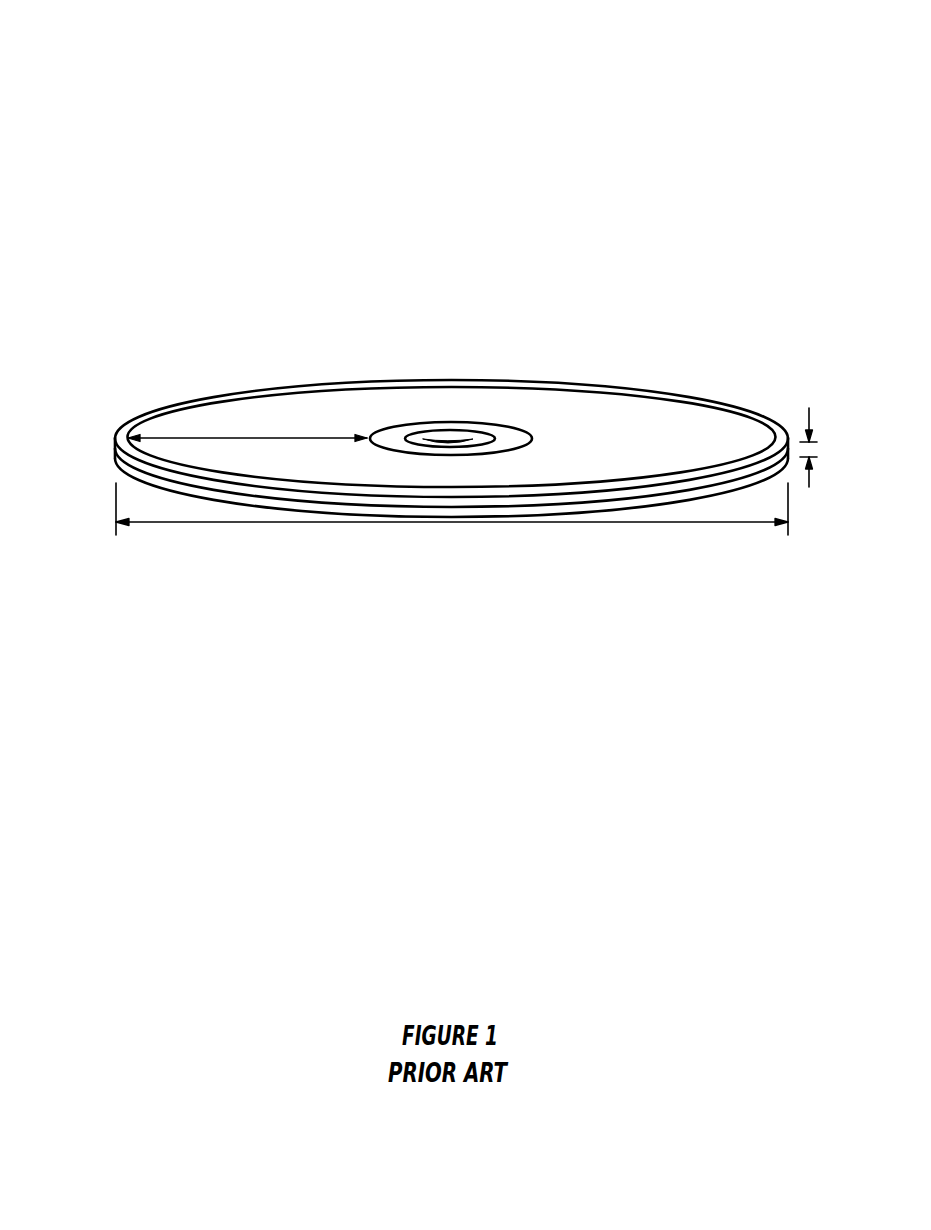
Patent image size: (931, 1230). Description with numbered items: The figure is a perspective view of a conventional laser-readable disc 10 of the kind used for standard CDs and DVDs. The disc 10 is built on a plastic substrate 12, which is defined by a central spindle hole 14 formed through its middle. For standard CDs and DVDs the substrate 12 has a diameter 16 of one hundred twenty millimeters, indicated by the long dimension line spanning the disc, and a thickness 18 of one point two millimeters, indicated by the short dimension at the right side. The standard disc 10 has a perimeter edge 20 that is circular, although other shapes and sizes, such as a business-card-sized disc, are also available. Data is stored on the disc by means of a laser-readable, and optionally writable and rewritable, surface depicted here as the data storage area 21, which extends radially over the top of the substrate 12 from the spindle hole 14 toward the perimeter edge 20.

The laser-readable disc 10 is at (401, 353).
The plastic substrate 12 is at (116, 457).
The central spindle hole 14 is at (459, 418).
The diameter 16 is at (415, 523).
The thickness 18 is at (812, 447).
The perimeter edge 20 is at (114, 430).
The data storage area 21 is at (250, 437).